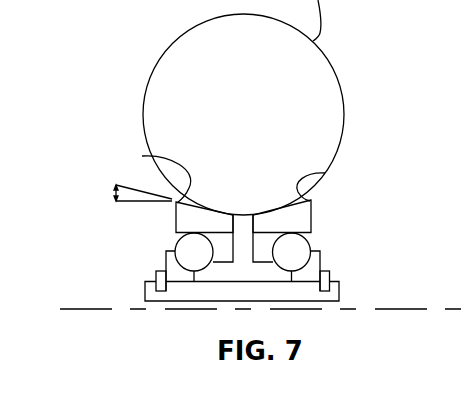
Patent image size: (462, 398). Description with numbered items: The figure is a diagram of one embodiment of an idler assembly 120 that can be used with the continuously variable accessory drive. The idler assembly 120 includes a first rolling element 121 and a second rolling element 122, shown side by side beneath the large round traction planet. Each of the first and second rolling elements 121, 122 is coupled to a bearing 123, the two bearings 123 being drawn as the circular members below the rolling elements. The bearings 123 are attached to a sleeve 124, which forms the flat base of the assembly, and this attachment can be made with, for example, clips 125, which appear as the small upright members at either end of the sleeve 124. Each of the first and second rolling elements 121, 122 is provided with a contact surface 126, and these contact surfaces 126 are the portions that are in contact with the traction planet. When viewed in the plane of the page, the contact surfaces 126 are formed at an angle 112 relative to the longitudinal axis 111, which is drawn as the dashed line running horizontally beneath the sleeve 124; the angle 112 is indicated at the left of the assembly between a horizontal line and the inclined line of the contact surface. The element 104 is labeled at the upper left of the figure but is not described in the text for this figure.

The sphere / ball 104 is at (68, 0).
The longitudinal axis 111 is at (400, 309).
The angle 112 is at (115, 194).
The idler assembly 120 is at (76, 134).
The first rolling element 121 is at (176, 225).
The second rolling element 122 is at (311, 220).
The bearing 123 is at (213, 241).
The sleeve 124 is at (152, 301).
The clip 125 is at (156, 273).
The contact surface 126 is at (142, 156).